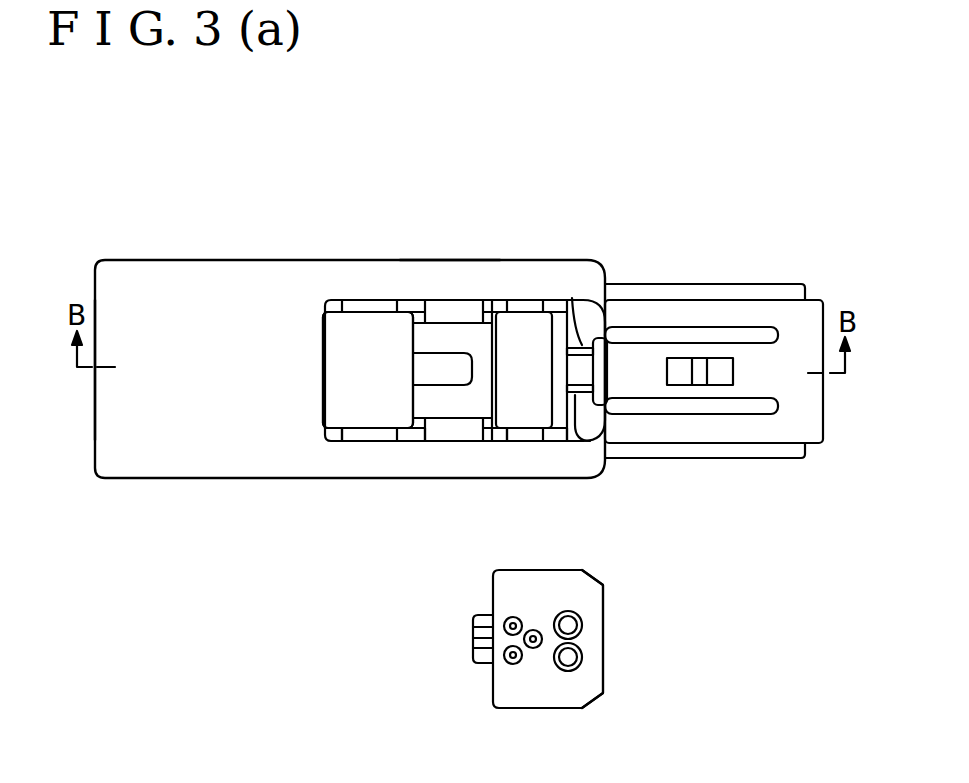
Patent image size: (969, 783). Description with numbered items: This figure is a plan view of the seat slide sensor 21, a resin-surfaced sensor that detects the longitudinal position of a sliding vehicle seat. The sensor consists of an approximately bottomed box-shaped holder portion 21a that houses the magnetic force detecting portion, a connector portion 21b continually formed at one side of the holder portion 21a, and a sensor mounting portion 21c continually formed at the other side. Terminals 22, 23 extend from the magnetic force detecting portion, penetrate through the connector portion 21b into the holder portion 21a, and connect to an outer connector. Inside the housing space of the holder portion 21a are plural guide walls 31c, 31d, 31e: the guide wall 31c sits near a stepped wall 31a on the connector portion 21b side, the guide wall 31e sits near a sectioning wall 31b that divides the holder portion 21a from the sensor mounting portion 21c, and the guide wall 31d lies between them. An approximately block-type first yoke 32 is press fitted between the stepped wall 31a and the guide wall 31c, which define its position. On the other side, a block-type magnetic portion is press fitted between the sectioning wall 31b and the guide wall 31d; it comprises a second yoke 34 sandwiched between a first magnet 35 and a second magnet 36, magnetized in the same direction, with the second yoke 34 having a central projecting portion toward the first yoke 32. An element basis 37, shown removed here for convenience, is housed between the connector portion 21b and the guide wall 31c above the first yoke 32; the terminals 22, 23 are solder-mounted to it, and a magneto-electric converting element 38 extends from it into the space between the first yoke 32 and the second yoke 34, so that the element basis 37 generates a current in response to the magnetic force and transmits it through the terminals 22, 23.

The seat slide sensor 21 is at (111, 216).
The holder portion 21a is at (448, 270).
The connector portion 21b is at (698, 287).
The sensor mounting portion 21c is at (149, 263).
The terminal 22 is at (578, 300).
The terminal 23 is at (593, 444).
The stepped wall 31a is at (550, 441).
The sectioning wall 31b is at (333, 302).
The guide wall 31c is at (500, 441).
The guide wall 31d is at (412, 428).
The guide wall 31e is at (333, 441).
The first yoke 32 is at (525, 418).
The second yoke 34 is at (449, 375).
The first magnet 35 is at (371, 320).
The second magnet 36 is at (387, 325).
The element basis 37 is at (663, 628).
The magneto-electric converting element 38 is at (473, 625).